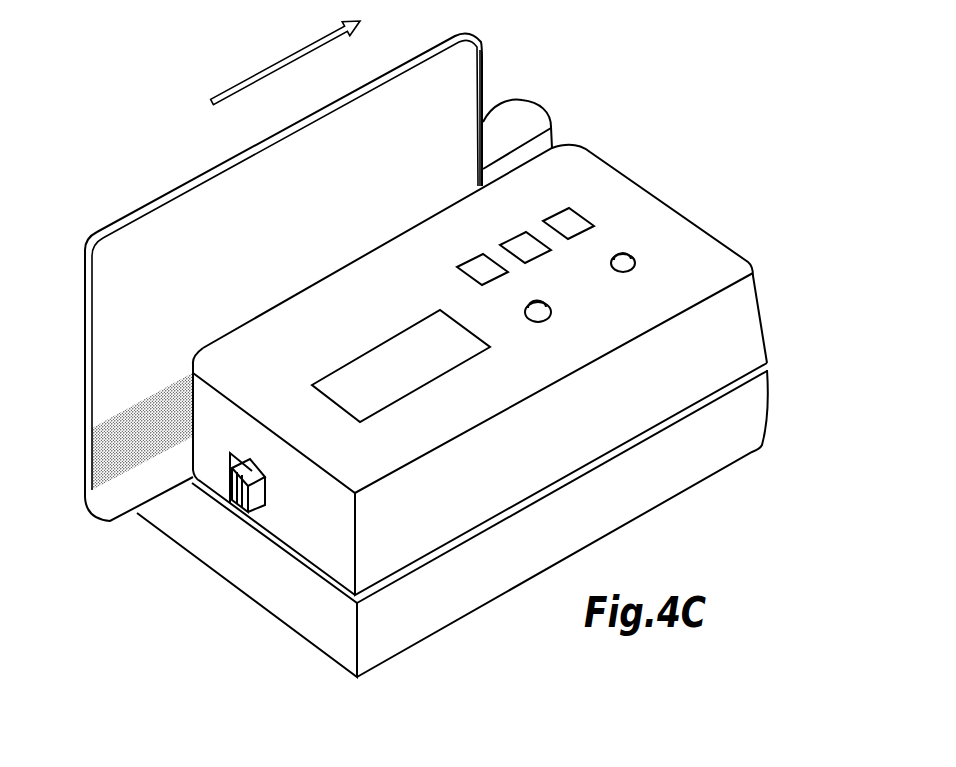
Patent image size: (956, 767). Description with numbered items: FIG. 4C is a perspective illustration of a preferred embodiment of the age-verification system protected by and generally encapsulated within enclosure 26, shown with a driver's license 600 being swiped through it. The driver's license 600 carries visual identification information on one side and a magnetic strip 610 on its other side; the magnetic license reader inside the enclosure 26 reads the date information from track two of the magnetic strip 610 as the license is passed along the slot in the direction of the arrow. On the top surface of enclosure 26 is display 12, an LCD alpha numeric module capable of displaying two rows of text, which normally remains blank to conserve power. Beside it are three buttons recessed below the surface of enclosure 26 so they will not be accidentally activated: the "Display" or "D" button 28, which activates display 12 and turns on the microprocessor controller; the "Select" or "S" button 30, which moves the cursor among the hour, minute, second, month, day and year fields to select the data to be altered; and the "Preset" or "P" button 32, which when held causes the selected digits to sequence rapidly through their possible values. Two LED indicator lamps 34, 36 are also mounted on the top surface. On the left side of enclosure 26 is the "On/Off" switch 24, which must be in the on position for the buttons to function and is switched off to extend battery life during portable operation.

The driver's license 600 is at (163, 236).
The magnetic strip 610 is at (113, 448).
The enclosure 26 is at (748, 308).
The display 12 is at (427, 338).
The "Display" or "D" button 28 is at (483, 255).
The "Select" or "S" button 30 is at (527, 232).
The "Preset" or "P" button 32 is at (568, 210).
The indicator lamp 34 is at (550, 302).
The indicator lamp 36 is at (634, 257).
The "On/Off" switch 24 is at (238, 495).